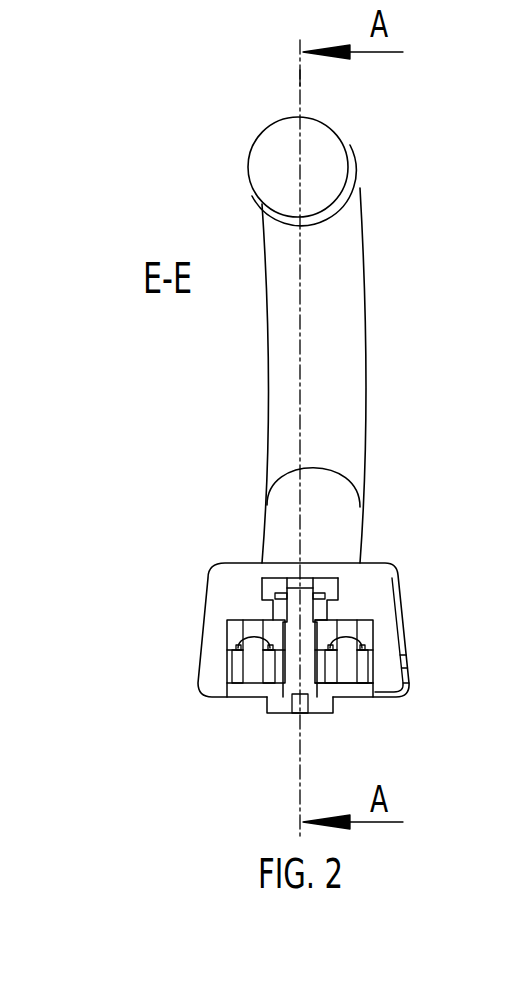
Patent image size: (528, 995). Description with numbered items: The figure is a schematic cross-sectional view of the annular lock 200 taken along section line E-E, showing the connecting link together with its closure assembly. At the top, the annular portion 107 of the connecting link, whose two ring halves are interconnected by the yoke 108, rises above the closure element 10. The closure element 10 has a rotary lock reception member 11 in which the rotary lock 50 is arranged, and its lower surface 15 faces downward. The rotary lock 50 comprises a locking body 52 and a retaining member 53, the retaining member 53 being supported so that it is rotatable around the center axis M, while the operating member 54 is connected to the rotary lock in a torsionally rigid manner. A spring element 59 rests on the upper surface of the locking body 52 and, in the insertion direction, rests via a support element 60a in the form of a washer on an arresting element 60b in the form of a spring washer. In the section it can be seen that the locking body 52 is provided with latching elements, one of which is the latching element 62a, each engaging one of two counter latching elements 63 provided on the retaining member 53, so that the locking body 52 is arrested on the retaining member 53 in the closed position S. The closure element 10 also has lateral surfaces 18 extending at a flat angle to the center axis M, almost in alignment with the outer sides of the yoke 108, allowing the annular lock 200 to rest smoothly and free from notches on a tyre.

The annular lock 200 is at (421, 336).
The annular portion 107 is at (375, 240).
The yoke 108 is at (350, 188).
The closure element 10 is at (225, 593).
The lateral surfaces 18 is at (203, 624).
The rotary lock 50 is at (245, 711).
The lower surface 15 is at (377, 684).
The operating member 54 is at (276, 702).
The spring element 59 is at (256, 622).
The locking body 52 is at (385, 640).
The retaining member 53 is at (383, 695).
The rotary lock reception member 11 is at (355, 614).
The support element 60a is at (370, 622).
The arresting element 60b is at (340, 586).
The latching element 62a is at (252, 616).
The counter latching elements 63 is at (230, 678).
The center axis M is at (300, 78).
The closed position S is at (438, 684).